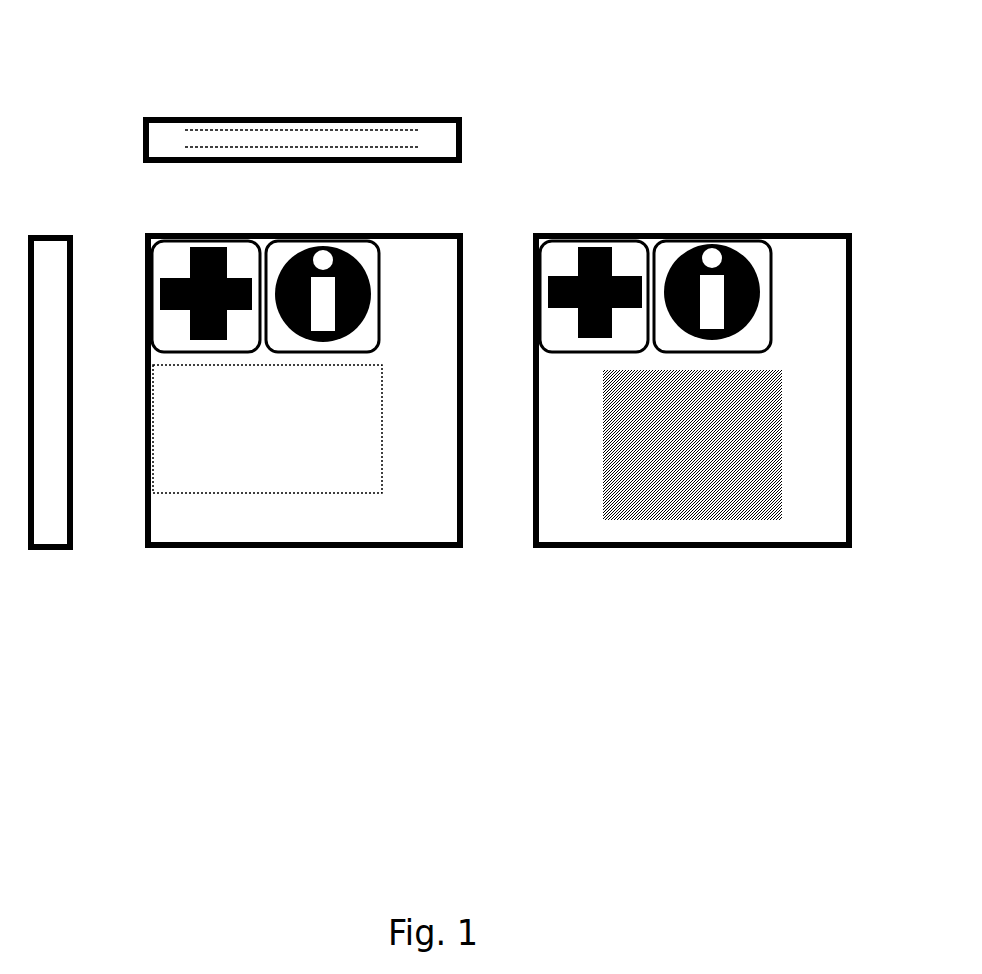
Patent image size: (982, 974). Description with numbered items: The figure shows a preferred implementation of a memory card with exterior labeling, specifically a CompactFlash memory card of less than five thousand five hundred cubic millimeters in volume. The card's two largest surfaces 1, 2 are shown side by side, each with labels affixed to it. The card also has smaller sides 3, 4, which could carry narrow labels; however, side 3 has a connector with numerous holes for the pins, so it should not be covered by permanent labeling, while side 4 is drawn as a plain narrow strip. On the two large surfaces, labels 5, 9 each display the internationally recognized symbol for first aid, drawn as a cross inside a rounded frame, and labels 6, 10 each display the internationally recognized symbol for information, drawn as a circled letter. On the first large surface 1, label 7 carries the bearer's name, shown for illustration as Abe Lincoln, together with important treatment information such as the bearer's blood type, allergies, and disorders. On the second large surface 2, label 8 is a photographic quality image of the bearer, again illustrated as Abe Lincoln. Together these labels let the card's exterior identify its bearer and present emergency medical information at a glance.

The largest surface 1 is at (324, 421).
The largest surface 2 is at (706, 416).
The smaller side 3 is at (167, 130).
The smaller side 4 is at (52, 505).
The first aid symbol label 5 is at (202, 245).
The information symbol label 6 is at (343, 255).
The bearer information label 7 is at (268, 470).
The photographic image label 8 is at (682, 520).
The first aid symbol label 9 is at (593, 245).
The information symbol label 10 is at (748, 258).